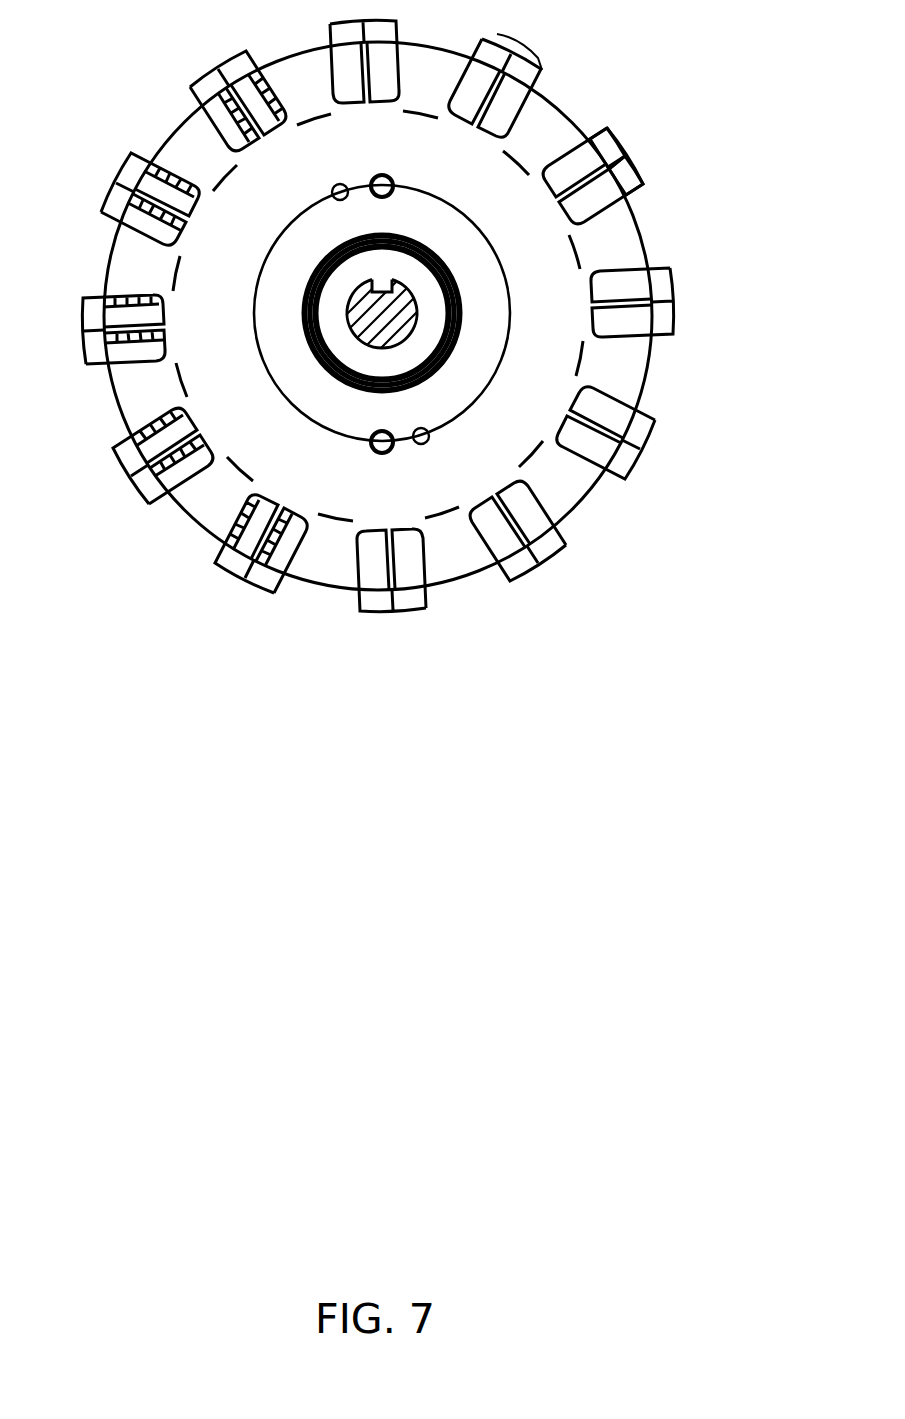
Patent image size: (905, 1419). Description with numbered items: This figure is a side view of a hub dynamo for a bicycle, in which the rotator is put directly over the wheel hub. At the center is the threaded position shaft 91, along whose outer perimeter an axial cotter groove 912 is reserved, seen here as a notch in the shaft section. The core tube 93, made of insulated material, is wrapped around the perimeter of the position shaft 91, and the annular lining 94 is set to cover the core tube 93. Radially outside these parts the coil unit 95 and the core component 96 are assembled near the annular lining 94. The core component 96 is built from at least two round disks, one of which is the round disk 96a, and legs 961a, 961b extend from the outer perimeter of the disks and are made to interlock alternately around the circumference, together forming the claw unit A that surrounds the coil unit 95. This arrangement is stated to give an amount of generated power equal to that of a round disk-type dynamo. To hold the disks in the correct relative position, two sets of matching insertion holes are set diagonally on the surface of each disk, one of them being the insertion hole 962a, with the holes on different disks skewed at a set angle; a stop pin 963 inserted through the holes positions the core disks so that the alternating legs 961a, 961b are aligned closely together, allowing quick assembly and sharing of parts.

The position shaft 91 is at (348, 307).
The axial cotter groove 912 is at (378, 280).
The core tube 93 is at (457, 280).
The annular lining 94 is at (460, 298).
The coil unit 95 is at (478, 580).
The core component 96 is at (548, 462).
The round disk 96a is at (535, 364).
The leg 961a is at (625, 175).
The leg 961b is at (608, 137).
The insertion hole 962a is at (417, 446).
The stop pin 963 is at (370, 442).
The claw unit A is at (519, 39).